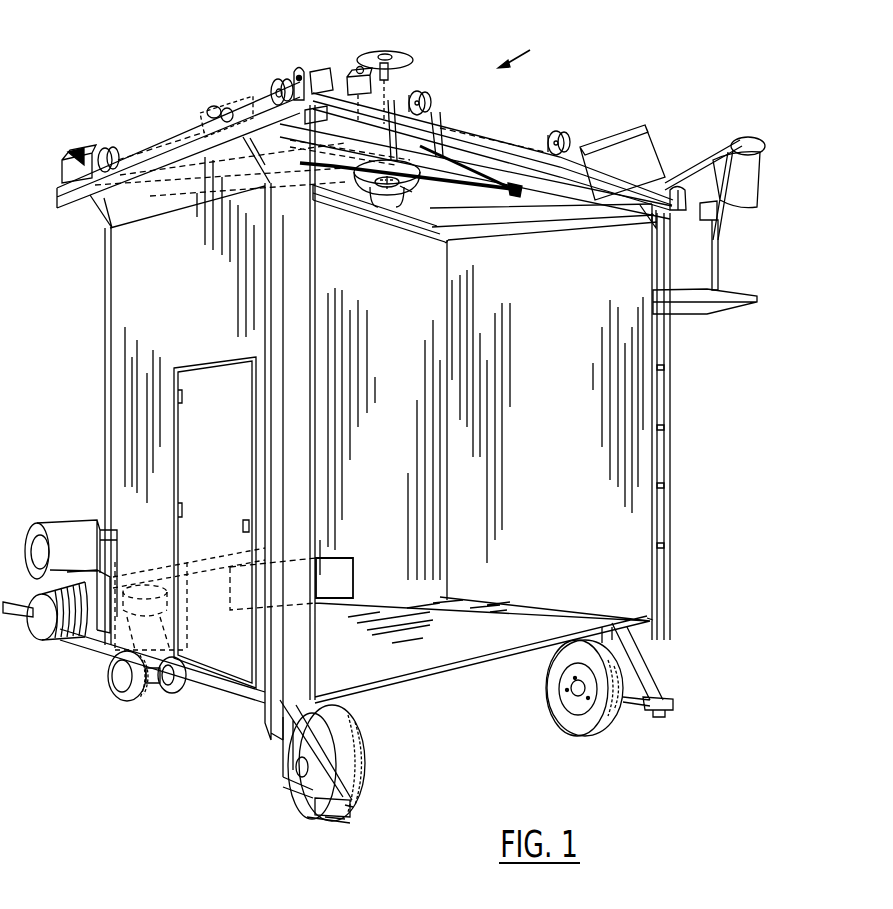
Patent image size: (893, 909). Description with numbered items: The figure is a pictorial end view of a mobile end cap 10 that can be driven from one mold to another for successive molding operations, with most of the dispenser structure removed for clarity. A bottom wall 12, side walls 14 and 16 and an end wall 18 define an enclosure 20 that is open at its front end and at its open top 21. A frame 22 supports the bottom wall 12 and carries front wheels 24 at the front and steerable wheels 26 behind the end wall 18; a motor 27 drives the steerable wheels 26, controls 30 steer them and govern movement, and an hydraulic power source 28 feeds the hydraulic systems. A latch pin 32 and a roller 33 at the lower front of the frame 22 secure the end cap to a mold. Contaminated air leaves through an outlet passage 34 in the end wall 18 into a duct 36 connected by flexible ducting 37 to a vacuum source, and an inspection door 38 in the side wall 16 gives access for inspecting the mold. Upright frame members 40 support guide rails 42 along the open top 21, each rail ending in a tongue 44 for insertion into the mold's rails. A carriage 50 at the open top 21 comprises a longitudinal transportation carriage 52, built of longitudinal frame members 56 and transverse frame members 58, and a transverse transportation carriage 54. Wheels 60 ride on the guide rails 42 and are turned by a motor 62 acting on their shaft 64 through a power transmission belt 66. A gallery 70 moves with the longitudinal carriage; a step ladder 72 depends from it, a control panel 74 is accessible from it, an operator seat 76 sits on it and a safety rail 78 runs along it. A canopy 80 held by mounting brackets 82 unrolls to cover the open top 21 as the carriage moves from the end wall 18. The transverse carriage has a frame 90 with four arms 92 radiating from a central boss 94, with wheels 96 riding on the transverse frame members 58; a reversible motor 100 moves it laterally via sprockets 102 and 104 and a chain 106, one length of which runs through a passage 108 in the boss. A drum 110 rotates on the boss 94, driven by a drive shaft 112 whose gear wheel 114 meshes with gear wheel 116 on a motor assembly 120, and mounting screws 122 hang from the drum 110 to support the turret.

The mobile end cap 10 is at (92, 383).
The bottom wall 12 is at (392, 665).
The side wall 14 is at (623, 470).
The side wall 16 is at (122, 443).
The end wall 18 is at (384, 484).
The enclosure 20 is at (448, 640).
The open top 21 is at (490, 238).
The frame 22 is at (228, 684).
The front wheels 24 is at (562, 703).
The steerable wheels 26 is at (122, 690).
The motor 27 is at (156, 692).
The hydraulic power source 28 is at (67, 528).
The controls 30 is at (133, 580).
The latch pin 32 is at (330, 820).
The roller 33 is at (348, 817).
The outlet passage 34 is at (357, 578).
The duct 36 is at (97, 605).
The flexible ducting 37 is at (57, 641).
The inspection door 38 is at (208, 372).
The upright frame members 40 is at (113, 304).
The guide rails 42 is at (151, 174).
The tongue 44 is at (315, 130).
The carriage 50 is at (526, 47).
The longitudinal transportation carriage 52 is at (146, 138).
The transverse transportation carriage 54 is at (533, 130).
The longitudinal frame members 56 is at (163, 146).
The transverse frame members 58 is at (487, 143).
The wheels 60 is at (104, 148).
The motor 62 is at (299, 66).
The shaft 64 is at (271, 91).
The power transmission belt 66 is at (312, 80).
The gallery 70 is at (720, 310).
The step ladder 72 is at (670, 412).
The control panel 74 is at (616, 132).
The operator seat 76 is at (736, 210).
The safety rail 78 is at (694, 168).
The canopy 80 is at (75, 152).
The mounting brackets 82 is at (62, 168).
The frame 90 is at (447, 171).
The arms 92 is at (411, 94).
The central boss 94 is at (437, 146).
The wheels 96 is at (428, 100).
The motor 100 is at (187, 127).
The sprocket 102 is at (211, 108).
The sprocket 104 is at (530, 186).
The chain 106 is at (224, 108).
The passage 108 is at (366, 162).
The drum 110 is at (388, 200).
The drive shaft 112 is at (389, 63).
The gear wheel 114 is at (378, 55).
The gear wheel 116 is at (357, 66).
The motor assembly 120 is at (350, 80).
The mounting screws 122 is at (405, 194).